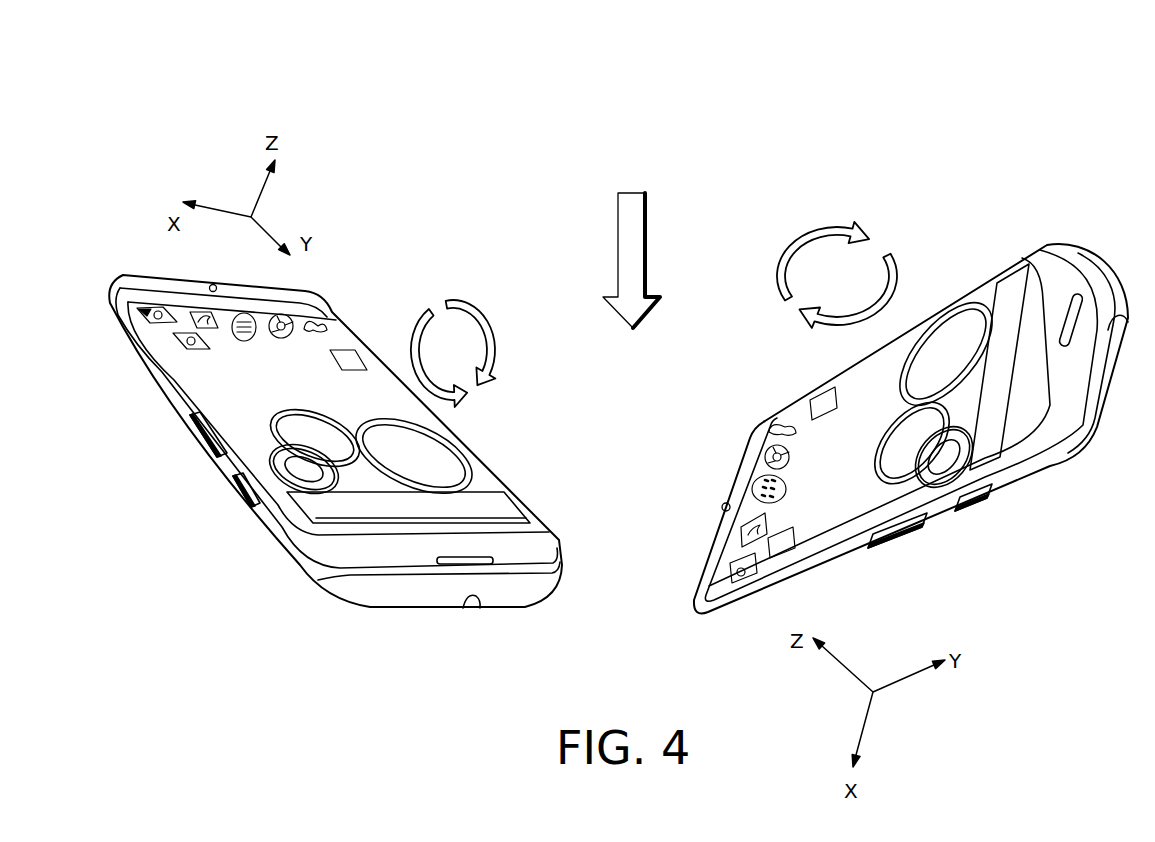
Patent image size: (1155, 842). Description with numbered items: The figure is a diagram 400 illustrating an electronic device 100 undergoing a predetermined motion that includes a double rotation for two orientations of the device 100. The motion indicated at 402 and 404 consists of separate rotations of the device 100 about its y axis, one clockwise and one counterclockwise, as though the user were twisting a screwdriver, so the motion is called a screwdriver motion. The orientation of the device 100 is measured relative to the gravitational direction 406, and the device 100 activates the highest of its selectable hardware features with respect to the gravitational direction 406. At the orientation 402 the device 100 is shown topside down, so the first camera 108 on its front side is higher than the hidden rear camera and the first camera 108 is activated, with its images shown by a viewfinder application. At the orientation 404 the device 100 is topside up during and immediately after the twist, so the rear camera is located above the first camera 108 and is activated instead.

The device 100 is at (125, 250).
The first camera 108 is at (216, 285).
The diagram 400 is at (1073, 70).
The orientation 402 is at (381, 609).
The orientation 404 is at (702, 624).
The gravitational direction 406 is at (617, 247).